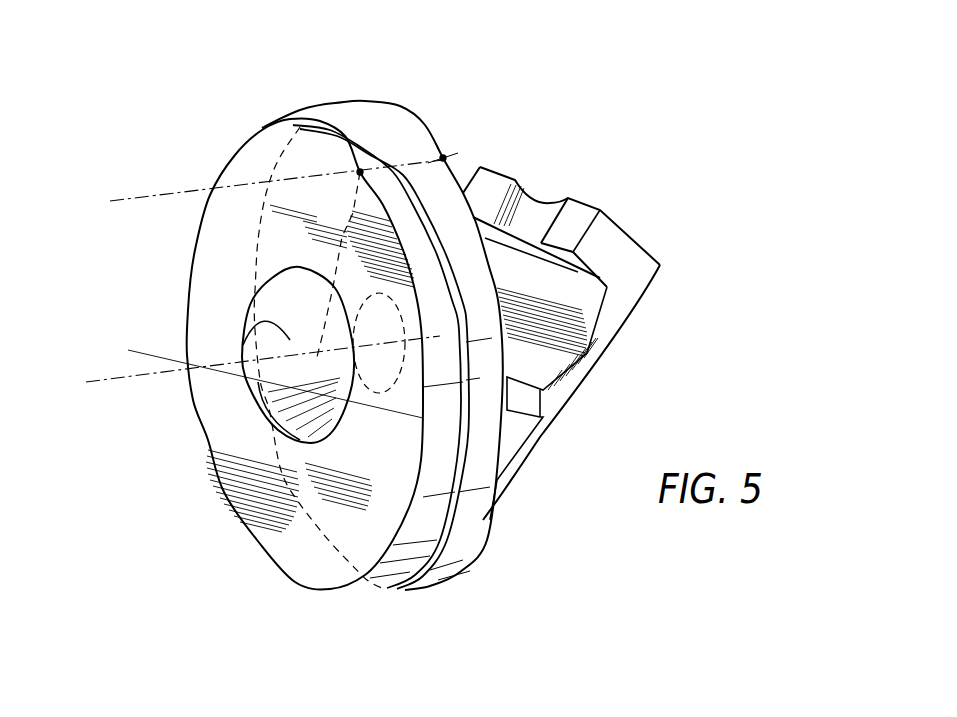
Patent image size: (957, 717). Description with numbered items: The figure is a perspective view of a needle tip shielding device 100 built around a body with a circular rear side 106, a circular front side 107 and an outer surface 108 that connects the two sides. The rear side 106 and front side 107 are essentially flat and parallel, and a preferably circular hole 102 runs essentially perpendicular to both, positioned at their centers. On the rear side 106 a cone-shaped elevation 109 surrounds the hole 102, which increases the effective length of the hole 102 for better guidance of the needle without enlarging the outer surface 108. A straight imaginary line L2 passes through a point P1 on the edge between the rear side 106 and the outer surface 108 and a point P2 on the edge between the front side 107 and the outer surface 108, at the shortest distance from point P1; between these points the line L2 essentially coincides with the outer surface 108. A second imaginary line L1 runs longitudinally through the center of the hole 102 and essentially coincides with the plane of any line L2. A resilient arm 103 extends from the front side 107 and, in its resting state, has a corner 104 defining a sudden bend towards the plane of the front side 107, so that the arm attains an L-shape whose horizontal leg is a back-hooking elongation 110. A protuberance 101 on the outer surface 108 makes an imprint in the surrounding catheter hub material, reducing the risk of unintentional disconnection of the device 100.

The needle tip shielding device 100 is at (597, 101).
The protuberance 101 is at (440, 537).
The hole 102 is at (275, 392).
The resilient arm 103 is at (585, 358).
The corner 104 is at (580, 266).
The rear side 106 is at (257, 155).
The front side 107 is at (333, 132).
The outer surface 108 is at (403, 135).
The cone-shaped elevation 109 is at (260, 305).
The back-hooking elongation 110 is at (670, 255).
The point P1 is at (360, 172).
The point P2 is at (442, 158).
The line L1 is at (247, 367).
The line L2 is at (260, 189).